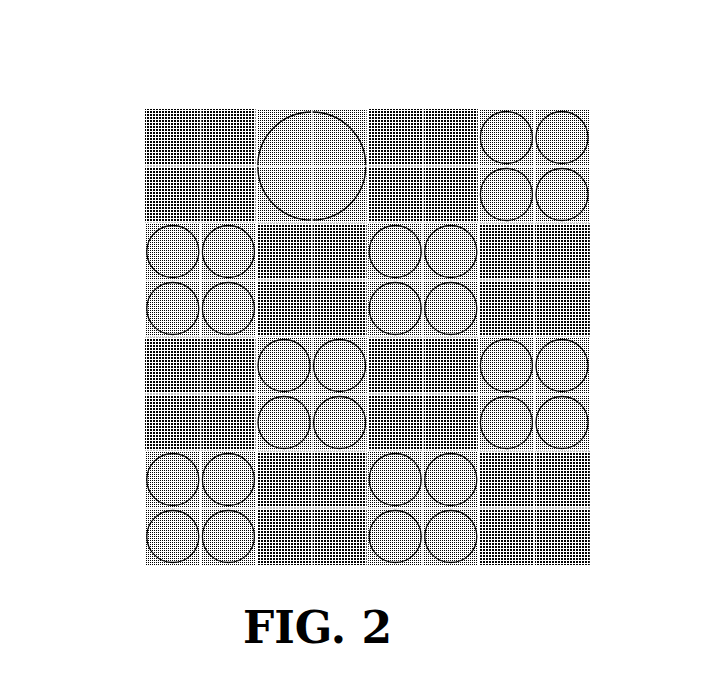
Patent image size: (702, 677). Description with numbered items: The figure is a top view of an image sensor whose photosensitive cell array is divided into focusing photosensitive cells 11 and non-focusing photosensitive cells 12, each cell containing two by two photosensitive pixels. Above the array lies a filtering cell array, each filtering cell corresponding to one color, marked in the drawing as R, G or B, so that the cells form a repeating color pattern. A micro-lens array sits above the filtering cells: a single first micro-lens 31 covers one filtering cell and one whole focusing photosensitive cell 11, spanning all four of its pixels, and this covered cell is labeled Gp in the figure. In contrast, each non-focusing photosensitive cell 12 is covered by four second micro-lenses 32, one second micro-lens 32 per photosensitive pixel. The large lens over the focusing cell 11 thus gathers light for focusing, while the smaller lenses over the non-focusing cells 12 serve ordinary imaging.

The non-focusing photosensitive cell 12 is at (316, 293).
The second micro-lens 32 is at (190, 112).
The focusing photosensitive cell 11 is at (338, 122).
The focusing photosensitive cell covered by first micro-lens Gp is at (322, 113).
The first micro-lens 31 is at (350, 128).
The red filtering cell color R is at (145, 163).
The green filtering cell color G is at (145, 235).
The blue filtering cell color B is at (260, 332).